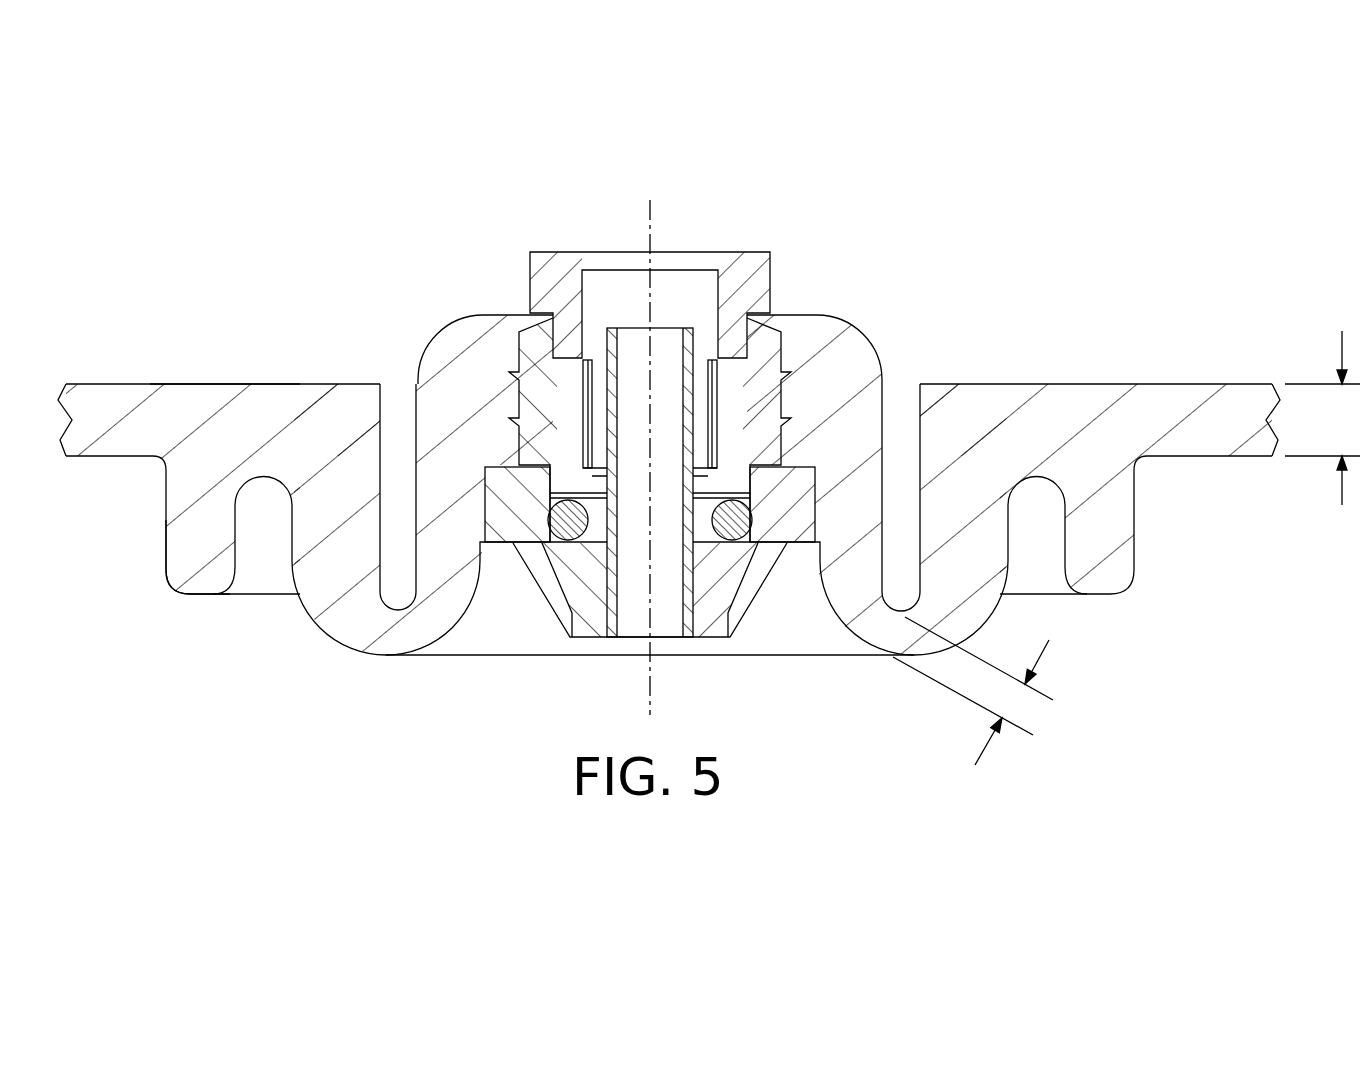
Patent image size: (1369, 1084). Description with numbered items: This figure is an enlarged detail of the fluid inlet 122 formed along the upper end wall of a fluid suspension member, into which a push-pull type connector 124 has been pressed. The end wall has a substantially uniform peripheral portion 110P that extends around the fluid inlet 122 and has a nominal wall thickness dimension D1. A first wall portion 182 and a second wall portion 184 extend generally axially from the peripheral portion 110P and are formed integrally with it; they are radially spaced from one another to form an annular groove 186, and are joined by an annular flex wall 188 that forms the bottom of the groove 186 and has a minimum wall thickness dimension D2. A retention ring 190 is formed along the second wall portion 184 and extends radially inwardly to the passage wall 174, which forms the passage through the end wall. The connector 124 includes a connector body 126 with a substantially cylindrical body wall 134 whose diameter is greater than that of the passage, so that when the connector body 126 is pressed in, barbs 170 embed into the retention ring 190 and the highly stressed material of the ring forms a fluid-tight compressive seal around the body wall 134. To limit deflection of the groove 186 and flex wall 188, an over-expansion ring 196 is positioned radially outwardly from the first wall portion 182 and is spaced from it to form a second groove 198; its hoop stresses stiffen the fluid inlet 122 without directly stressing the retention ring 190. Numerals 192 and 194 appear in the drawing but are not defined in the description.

The peripheral portion 110P is at (93, 412).
The fluid inlet 122 is at (460, 182).
The push-pull type connector 124 is at (700, 238).
The connector body 126 is at (773, 523).
The body wall 134 is at (772, 448).
The barb 170 is at (790, 420).
The passage wall 174 is at (512, 445).
The first wall portion 182 is at (337, 550).
The second wall portion 184 is at (448, 550).
The annular groove 186 is at (397, 427).
The annular flex wall 188 is at (397, 637).
The retention ring 190 is at (493, 375).
The panel recess 192 is at (1185, 457).
The panel top surface 194 is at (213, 384).
The over-expansion ring 196 is at (202, 592).
The second groove 198 is at (1040, 520).
The nominal wall thickness dimension D1 is at (1322, 418).
The minimum wall thickness dimension D2 is at (973, 707).